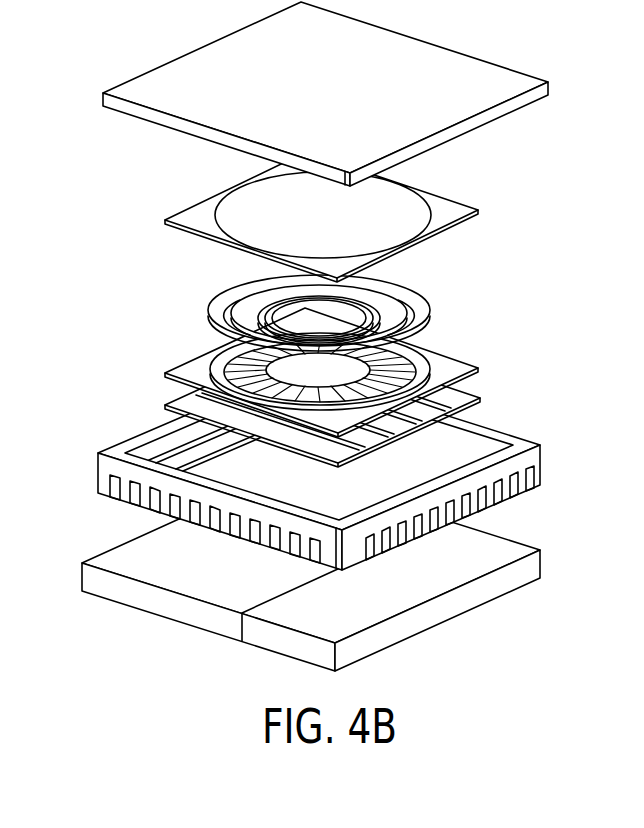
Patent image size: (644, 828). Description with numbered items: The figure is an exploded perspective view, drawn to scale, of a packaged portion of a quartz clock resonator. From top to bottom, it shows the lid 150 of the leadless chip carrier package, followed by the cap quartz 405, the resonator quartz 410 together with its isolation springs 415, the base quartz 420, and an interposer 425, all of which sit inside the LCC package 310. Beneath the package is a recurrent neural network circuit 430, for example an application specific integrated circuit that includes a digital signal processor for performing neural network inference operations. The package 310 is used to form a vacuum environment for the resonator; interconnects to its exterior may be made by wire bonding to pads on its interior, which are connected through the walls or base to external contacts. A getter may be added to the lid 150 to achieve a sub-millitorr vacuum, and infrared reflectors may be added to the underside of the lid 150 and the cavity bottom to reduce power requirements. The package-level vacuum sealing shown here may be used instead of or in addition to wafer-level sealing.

The lid 150 is at (550, 85).
The cap quartz 405 is at (478, 210).
The resonator quartz 410 is at (432, 317).
The isolation springs 415 is at (395, 302).
The base quartz 420 is at (478, 367).
The interposer 425 is at (477, 400).
The package 310 is at (540, 462).
The recurrent neural network circuit 430 is at (540, 567).